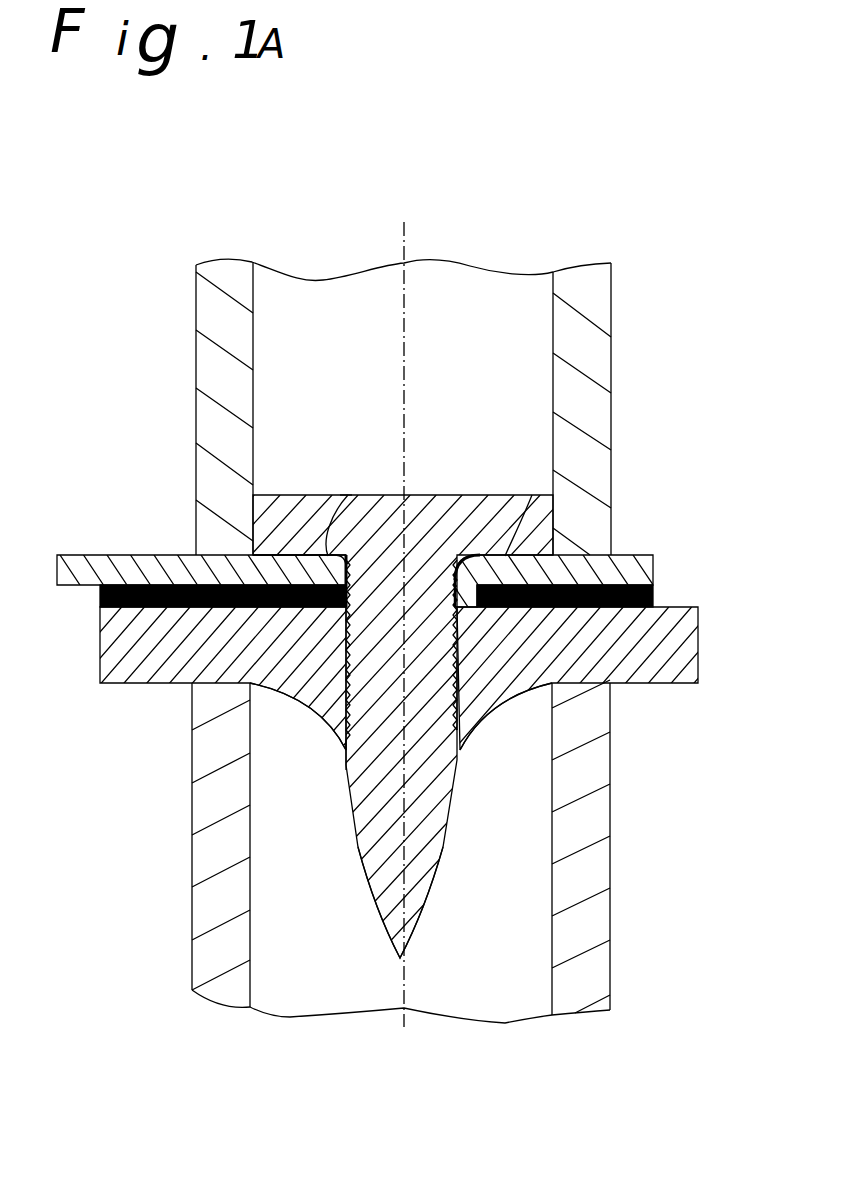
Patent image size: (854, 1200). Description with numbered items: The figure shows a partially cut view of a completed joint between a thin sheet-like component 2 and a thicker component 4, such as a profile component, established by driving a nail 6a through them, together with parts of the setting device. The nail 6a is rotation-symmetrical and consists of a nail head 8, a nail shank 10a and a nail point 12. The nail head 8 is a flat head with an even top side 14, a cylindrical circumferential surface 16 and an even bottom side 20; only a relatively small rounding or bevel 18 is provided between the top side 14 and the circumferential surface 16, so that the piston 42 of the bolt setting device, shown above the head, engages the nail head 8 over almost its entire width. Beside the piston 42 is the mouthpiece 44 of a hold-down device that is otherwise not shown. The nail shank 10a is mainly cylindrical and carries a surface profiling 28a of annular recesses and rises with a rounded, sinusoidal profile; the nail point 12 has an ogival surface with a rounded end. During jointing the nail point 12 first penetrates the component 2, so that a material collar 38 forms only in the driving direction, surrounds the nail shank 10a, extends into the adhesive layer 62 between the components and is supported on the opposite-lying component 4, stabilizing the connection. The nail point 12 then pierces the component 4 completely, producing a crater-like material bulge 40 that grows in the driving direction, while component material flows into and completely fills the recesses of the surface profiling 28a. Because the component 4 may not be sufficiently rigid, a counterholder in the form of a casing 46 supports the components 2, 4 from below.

The component 2 is at (647, 553).
The component 4 is at (670, 663).
The nail 6a is at (345, 768).
The nail head 8 is at (507, 515).
The nail shank 10a is at (427, 707).
The nail point 12 is at (412, 863).
The top side 14 is at (300, 493).
The cylindrical circumferential surface 16 is at (253, 542).
The rounding or bevel 18 is at (262, 512).
The bottom side 20 is at (547, 567).
The surface profiling 28a is at (457, 667).
The material collar 38 is at (342, 497).
The crater-like material bulge 40 is at (303, 703).
The piston 42 is at (452, 283).
The mouthpiece 44 is at (212, 295).
The casing 46 is at (203, 907).
The adhesive layer 62 is at (655, 592).